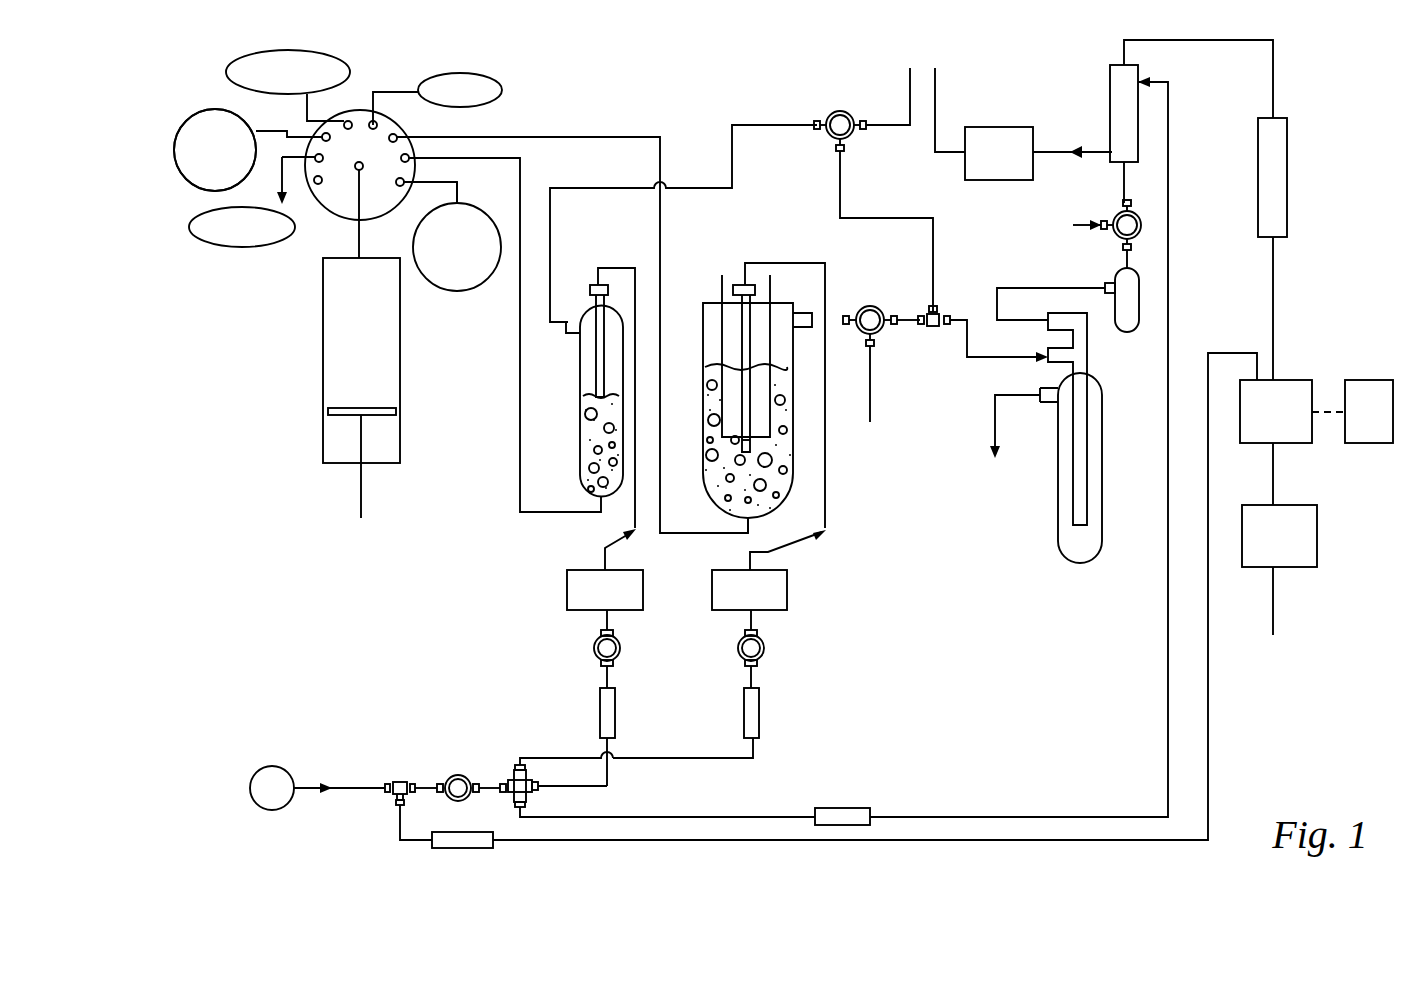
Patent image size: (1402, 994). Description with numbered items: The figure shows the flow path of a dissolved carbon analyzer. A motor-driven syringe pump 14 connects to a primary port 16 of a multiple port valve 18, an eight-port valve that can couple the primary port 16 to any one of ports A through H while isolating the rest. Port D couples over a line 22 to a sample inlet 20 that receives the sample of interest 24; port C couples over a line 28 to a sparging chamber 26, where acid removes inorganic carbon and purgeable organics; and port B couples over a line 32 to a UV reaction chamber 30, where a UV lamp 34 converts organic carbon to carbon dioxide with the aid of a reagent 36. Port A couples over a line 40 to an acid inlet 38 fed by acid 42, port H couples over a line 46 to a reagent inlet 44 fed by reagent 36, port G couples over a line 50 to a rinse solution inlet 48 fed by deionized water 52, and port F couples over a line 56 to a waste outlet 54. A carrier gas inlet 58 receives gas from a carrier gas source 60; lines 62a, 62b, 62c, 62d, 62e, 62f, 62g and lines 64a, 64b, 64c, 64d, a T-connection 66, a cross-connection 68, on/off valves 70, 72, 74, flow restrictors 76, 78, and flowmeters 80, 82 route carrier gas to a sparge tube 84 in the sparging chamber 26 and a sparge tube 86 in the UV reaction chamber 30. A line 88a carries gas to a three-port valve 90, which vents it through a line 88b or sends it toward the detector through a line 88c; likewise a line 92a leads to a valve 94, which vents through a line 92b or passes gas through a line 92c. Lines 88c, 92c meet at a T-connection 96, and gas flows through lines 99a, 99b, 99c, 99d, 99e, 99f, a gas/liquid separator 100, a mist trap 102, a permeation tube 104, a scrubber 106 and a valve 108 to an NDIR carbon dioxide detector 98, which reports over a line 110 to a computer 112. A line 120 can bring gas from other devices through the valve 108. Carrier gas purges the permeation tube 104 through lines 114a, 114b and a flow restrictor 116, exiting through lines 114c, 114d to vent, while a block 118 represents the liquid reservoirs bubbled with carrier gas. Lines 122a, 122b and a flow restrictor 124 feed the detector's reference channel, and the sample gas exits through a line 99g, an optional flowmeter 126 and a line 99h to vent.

The syringe pump 14 is at (361, 388).
The primary port 16 is at (356, 172).
The multiple port valve 18 is at (404, 128).
The sample inlet 20 is at (460, 196).
The line 22 is at (418, 182).
The sample of interest 24 is at (437, 282).
The sparging chamber 26 is at (584, 375).
The line 28 is at (521, 450).
The UV reaction chamber 30 is at (790, 482).
The line 32 is at (580, 137).
The UV lamp 34 is at (771, 390).
The reagent 36 is at (238, 58).
The acid inlet 38 is at (395, 90).
The line 40 is at (372, 88).
The acid 42 is at (492, 82).
The reagent inlet 44 is at (300, 98).
The line 46 is at (312, 120).
The rinse solution inlet 48 is at (253, 118).
The line 50 is at (266, 130).
The deionized water 52 is at (202, 176).
The waste outlet 54 is at (276, 178).
The line 56 is at (290, 156).
The carrier gas inlet 58 is at (340, 782).
The carrier gas source 60 is at (262, 811).
The line 62a is at (392, 795).
The line 62b is at (440, 780).
The line 62c is at (506, 778).
The line 62d is at (610, 768).
The line 62e is at (612, 682).
The line 62f is at (610, 620).
The line 62g is at (615, 544).
The line 64a is at (693, 758).
The line 64b is at (756, 682).
The line 64c is at (755, 620).
The line 64d is at (800, 538).
The T-connection 66 is at (400, 780).
The cross-connection 68 is at (534, 780).
The on/off valve 70 is at (465, 793).
The on/off valve 72 is at (620, 650).
The on/off valve 74 is at (764, 650).
The flow restrictor 76 is at (600, 706).
The flow restrictor 78 is at (744, 706).
The flowmeter 80 is at (605, 590).
The flowmeter 82 is at (749, 590).
The sparge tube 84 is at (596, 350).
The sparge tube 86 is at (745, 340).
The line 88a is at (730, 152).
The line 88b is at (897, 130).
The line 88c is at (842, 190).
The 3-port valve 90 is at (822, 138).
The line 92a is at (818, 308).
The line 92b is at (874, 404).
The line 92c is at (908, 323).
The valve 94 is at (876, 335).
The T-connection 96 is at (940, 314).
The CO2 detector 98 is at (1283, 378).
The line 99a is at (965, 360).
The line 99b is at (1008, 282).
The line 99c is at (1135, 266).
The line 99d is at (1130, 182).
The line 99e is at (1194, 42).
The line 99f is at (1272, 312).
The line 99g is at (1275, 474).
The line 99h is at (1275, 603).
The gas/liquid separator 100 is at (1103, 535).
The mist trap 102 is at (1122, 330).
The permeation tube 104 is at (1110, 78).
The scrubber 106 is at (1288, 150).
The valve 108 is at (1117, 212).
The line 110 is at (1330, 412).
The computer 112 is at (1352, 442).
The line 114a is at (590, 817).
The line 114b is at (968, 810).
The line 114c is at (1077, 146).
The line 114d is at (938, 92).
The flow restrictor 116 is at (860, 808).
The block 118 is at (999, 153).
The line 120 is at (1073, 222).
The line 122a is at (402, 848).
The line 122b is at (722, 843).
The flow restrictor 124 is at (480, 848).
The flowmeter 126 is at (1279, 536).